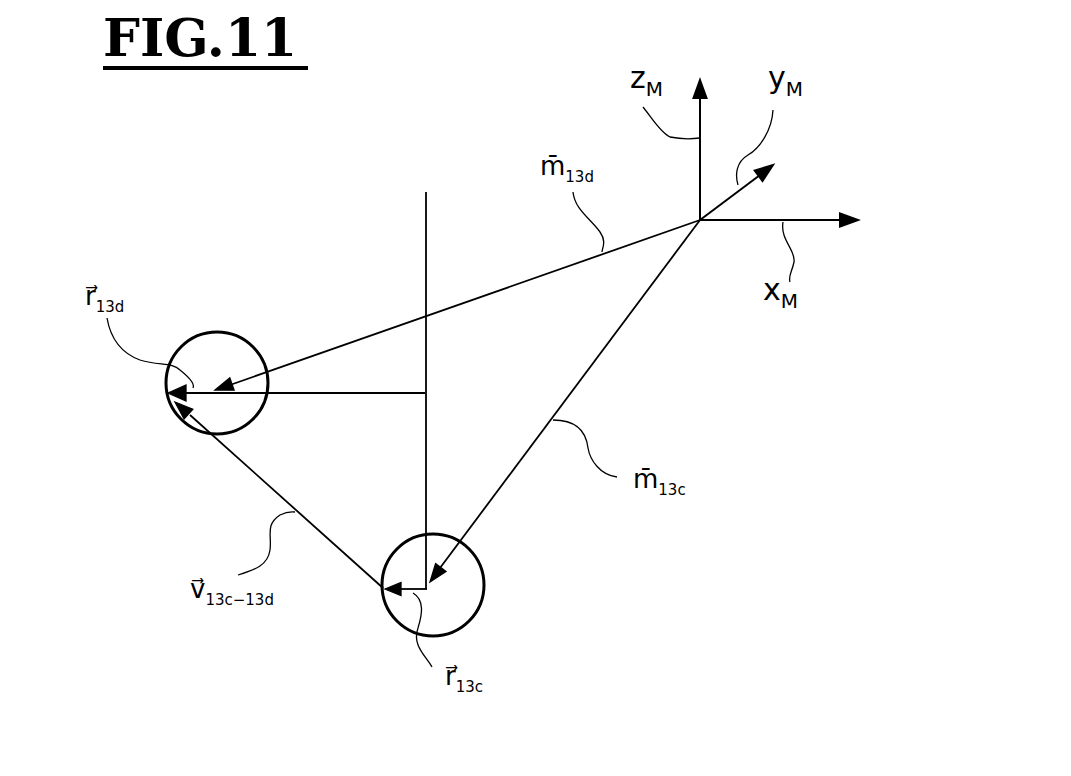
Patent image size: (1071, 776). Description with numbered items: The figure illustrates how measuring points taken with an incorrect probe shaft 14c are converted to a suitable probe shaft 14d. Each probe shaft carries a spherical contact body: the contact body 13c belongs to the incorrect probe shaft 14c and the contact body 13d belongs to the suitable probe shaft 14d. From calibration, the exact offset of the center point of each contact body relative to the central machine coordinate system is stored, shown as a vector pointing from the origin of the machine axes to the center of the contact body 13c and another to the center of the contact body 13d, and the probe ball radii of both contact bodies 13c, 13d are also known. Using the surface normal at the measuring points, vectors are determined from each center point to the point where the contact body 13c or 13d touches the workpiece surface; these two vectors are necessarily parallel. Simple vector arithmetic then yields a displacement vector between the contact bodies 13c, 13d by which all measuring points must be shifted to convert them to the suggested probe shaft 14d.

The contact body 13c is at (468, 573).
The contact body 13d is at (185, 347).
The probe shaft 14c is at (425, 430).
The probe shaft 14d is at (313, 395).